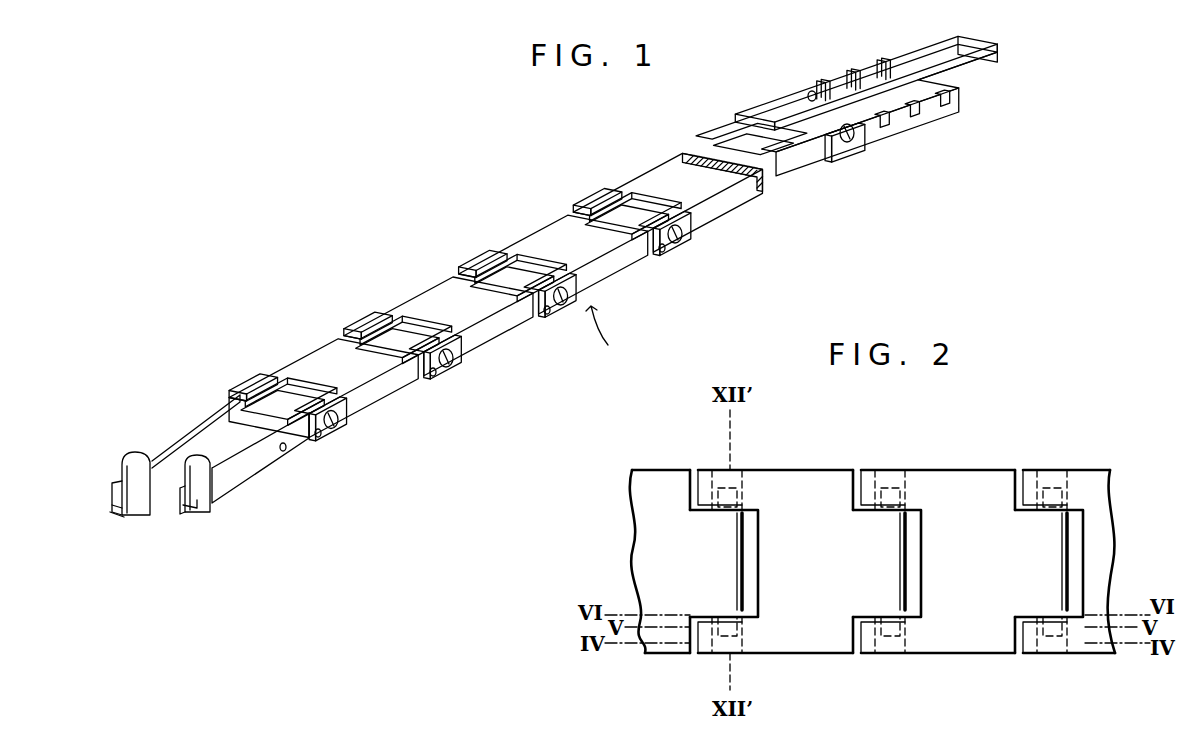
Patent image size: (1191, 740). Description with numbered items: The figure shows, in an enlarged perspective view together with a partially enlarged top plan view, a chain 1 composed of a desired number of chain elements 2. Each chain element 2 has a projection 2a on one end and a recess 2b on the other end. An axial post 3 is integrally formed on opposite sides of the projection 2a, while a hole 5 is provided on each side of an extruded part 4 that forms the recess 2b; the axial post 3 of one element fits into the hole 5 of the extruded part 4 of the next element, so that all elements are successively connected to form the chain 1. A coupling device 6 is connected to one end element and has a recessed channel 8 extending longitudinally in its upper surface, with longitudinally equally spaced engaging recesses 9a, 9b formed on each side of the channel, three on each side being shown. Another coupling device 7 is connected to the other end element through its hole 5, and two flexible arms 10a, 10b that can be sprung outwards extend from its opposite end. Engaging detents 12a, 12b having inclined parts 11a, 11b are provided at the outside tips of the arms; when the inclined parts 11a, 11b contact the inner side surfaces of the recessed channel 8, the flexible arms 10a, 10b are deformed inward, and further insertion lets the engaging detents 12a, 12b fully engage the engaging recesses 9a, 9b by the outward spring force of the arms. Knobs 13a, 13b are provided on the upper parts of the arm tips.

In FIG. 2, the chain 1 is at (783, 454).
In FIG. 1, the chain element 2 is at (722, 208).
In FIG. 2, the chain element 2 is at (660, 470).
In FIG. 1, the projection 2a is at (790, 108).
In FIG. 2, the projection 2a is at (735, 587).
In FIG. 1, the recess 2b is at (630, 192).
In FIG. 2, the recess 2b is at (753, 545).
In FIG. 1, the axial post 3 is at (290, 440).
In FIG. 2, the axial post 3 is at (738, 488).
In FIG. 1, the extruded part 4 is at (572, 212).
In FIG. 2, the extruded part 4 is at (700, 470).
In FIG. 1, the hole 5 is at (338, 428).
In FIG. 2, the hole 5 is at (725, 478).
In FIG. 1, the coupling device 6 is at (930, 96).
In FIG. 1, the coupling device 7 is at (283, 451).
In FIG. 1, the recessed channel 8 is at (898, 68).
In FIG. 1, the engaging recess 9a is at (880, 118).
In FIG. 1, the engaging recess 9b is at (795, 100).
In FIG. 1, the flexible arm 10a is at (240, 470).
In FIG. 1, the flexible arm 10b is at (172, 448).
In FIG. 1, the inclined part 11a is at (200, 500).
In FIG. 1, the inclined part 11b is at (112, 505).
In FIG. 1, the engaging detent 12a is at (183, 507).
In FIG. 1, the engaging detent 12b is at (112, 495).
In FIG. 1, the knob 13a is at (193, 455).
In FIG. 1, the knob 13b is at (125, 455).